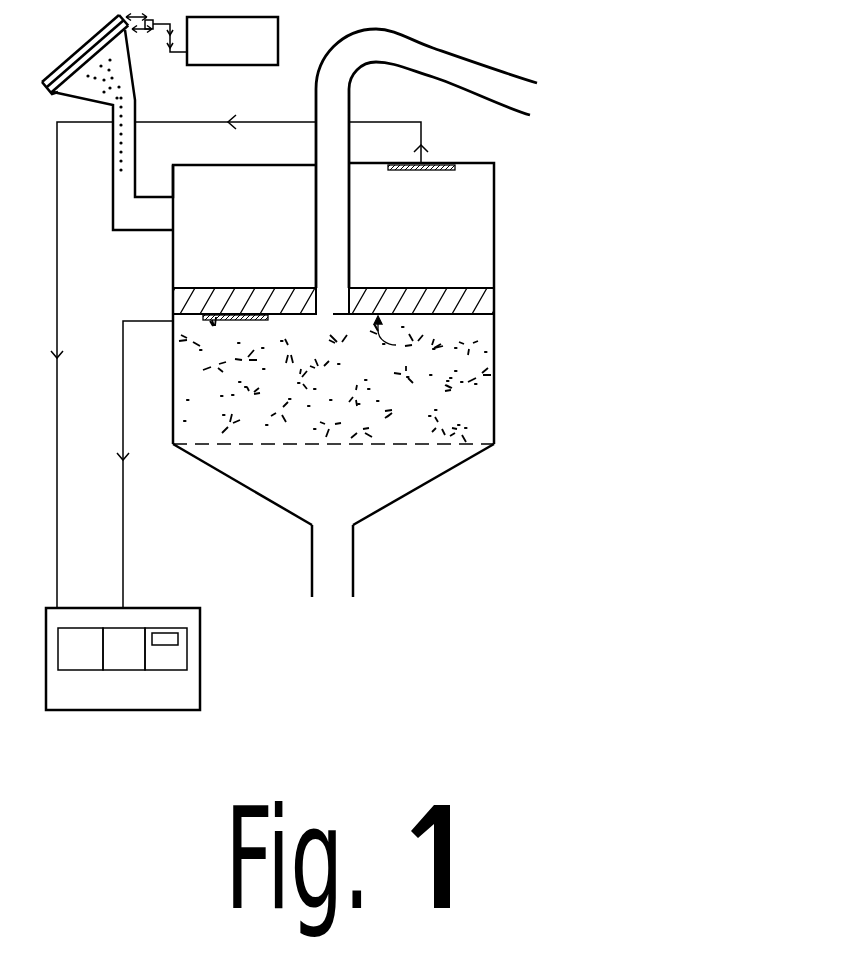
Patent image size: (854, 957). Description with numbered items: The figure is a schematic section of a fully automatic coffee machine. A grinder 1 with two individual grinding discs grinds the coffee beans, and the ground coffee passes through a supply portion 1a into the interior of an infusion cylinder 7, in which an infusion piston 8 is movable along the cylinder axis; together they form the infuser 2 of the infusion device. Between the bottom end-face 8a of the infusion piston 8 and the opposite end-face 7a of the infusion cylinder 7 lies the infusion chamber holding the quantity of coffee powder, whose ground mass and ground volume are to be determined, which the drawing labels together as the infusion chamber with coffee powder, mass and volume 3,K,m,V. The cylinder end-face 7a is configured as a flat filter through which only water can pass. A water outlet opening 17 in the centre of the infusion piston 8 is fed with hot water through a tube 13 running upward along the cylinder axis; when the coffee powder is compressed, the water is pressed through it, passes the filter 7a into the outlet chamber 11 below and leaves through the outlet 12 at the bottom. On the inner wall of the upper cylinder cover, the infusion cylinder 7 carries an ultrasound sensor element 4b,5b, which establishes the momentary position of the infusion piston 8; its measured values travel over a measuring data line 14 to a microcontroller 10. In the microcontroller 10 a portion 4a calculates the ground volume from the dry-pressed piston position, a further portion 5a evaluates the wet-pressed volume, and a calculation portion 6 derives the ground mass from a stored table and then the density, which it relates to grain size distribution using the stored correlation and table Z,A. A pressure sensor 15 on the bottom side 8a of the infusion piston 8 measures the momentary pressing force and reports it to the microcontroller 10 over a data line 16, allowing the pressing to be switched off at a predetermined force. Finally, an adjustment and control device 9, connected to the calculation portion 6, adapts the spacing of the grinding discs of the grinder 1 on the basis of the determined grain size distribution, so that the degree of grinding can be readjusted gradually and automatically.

The grinder 1 is at (76, 36).
The supply portion 1a is at (122, 203).
The adjustment and control device 9 is at (232, 41).
The tube 13 is at (432, 52).
The infuser 2 is at (378, 303).
The infusion cylinder 7 is at (494, 243).
The infusion piston 8 is at (356, 297).
The water outlet opening 17 is at (333, 312).
The end-face of the infusion piston 8a is at (405, 338).
The pressure sensor 15 is at (212, 321).
The ultrasound sensor element 4b,5b is at (400, 172).
The infusion chamber with quantity of coffee powder 3,K,m,V is at (494, 368).
The end-face of the infusion cylinder 7a is at (285, 442).
The outlet chamber 11 is at (398, 482).
The outlet 12 is at (340, 572).
The measuring data line 14 is at (57, 406).
The data line 16 is at (124, 515).
The microcontroller 10 is at (202, 688).
The portion of the microcontroller 4a is at (80, 672).
The further portion of the microcontroller 5a is at (124, 672).
The calculation portion 6 is at (170, 672).
The correlation and table Z,A is at (178, 639).